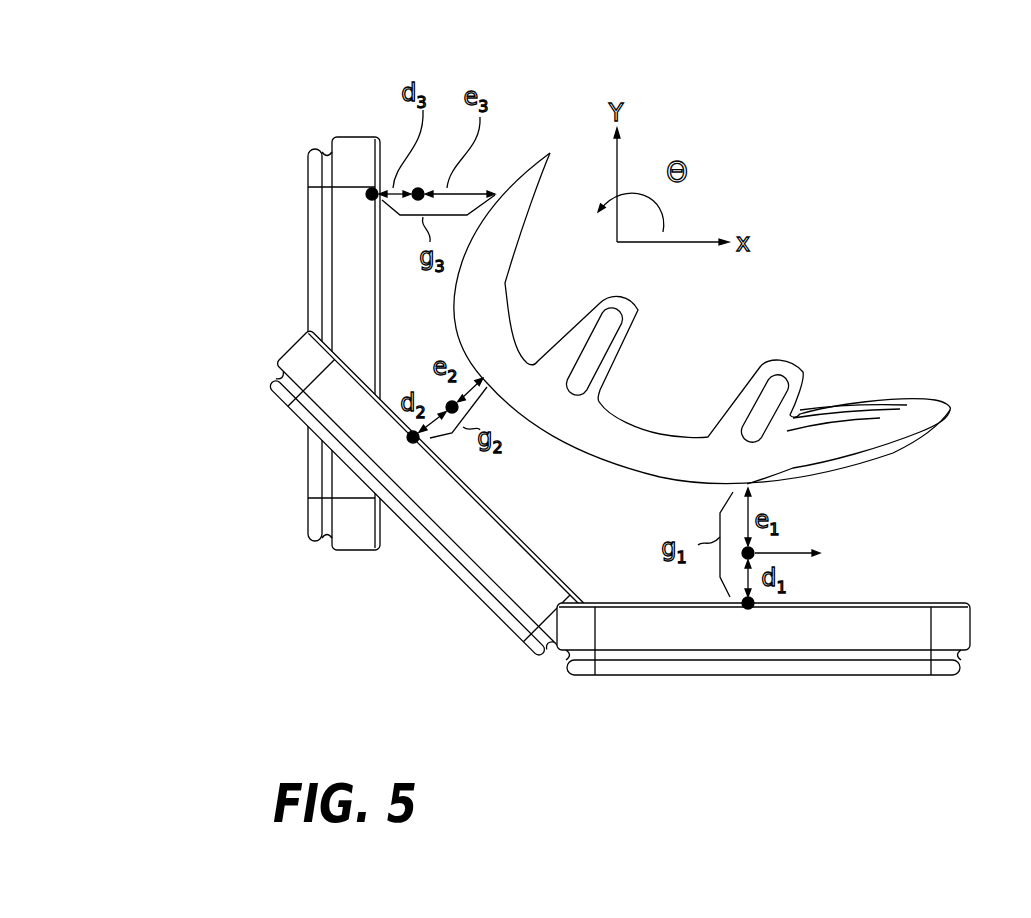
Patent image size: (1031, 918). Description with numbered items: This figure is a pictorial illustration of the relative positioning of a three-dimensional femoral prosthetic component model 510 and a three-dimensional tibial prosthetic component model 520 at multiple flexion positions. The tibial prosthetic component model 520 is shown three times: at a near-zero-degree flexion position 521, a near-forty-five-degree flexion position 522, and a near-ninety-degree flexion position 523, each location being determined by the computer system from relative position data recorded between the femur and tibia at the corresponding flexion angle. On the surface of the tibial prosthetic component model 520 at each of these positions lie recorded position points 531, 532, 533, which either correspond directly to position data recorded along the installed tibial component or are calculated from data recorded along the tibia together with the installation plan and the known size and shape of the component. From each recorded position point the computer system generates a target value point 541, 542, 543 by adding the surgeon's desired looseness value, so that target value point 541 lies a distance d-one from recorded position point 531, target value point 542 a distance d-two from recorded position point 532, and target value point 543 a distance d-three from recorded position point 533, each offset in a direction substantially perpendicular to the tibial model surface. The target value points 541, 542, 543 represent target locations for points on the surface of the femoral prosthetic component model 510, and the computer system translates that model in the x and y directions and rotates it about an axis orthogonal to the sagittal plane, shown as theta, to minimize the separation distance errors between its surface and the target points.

The femoral prosthetic component model 510 is at (893, 400).
The tibial prosthetic component model 520 is at (562, 413).
The near-0° flexion position 521 is at (590, 677).
The near-45° flexion position 522 is at (273, 383).
The near-90° flexion position 523 is at (313, 150).
The recorded position point 531 is at (749, 609).
The recorded position point 532 is at (413, 443).
The recorded position point 533 is at (366, 195).
The target value point 541 is at (760, 551).
The target value point 542 is at (449, 402).
The target value point 543 is at (418, 202).